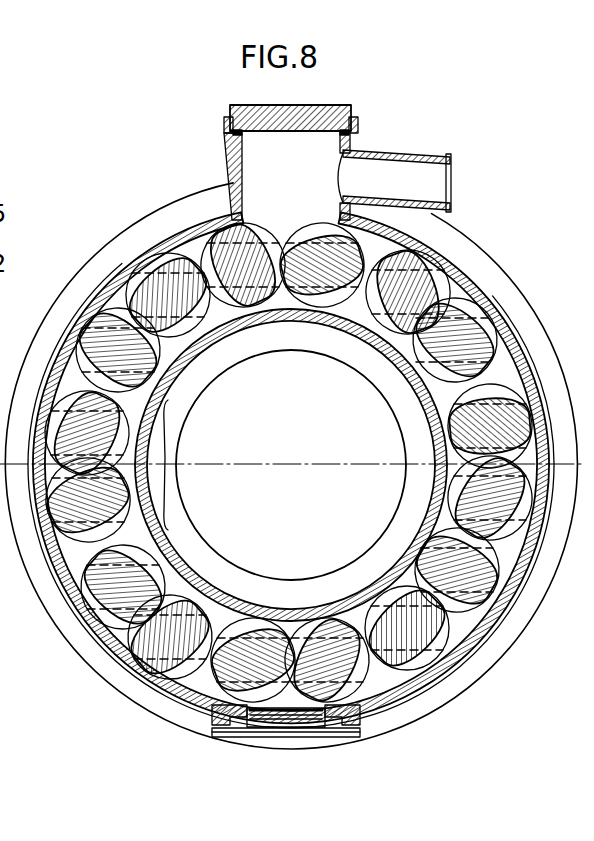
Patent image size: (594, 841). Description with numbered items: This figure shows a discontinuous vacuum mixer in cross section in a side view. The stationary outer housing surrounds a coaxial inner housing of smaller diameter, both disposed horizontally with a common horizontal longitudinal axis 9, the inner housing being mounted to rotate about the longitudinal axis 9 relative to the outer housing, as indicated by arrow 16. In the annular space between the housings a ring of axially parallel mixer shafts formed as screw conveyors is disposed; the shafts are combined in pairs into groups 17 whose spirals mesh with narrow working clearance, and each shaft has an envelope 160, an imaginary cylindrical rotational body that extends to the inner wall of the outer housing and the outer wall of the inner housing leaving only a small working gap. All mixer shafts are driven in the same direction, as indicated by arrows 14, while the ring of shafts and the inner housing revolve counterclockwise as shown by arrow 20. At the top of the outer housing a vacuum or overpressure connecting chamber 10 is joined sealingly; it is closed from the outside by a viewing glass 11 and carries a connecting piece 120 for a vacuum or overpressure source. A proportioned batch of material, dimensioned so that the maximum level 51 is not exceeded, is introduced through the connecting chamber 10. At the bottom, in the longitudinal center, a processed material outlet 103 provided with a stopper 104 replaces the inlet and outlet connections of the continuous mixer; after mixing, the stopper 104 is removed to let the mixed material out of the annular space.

The longitudinal axis 9 is at (22, 457).
The vacuum or overpressure connecting chamber 10 is at (354, 142).
The viewing glass 11 is at (352, 106).
The connecting piece 120 is at (432, 174).
The arrows 14 is at (289, 439).
The envelope 160 is at (440, 288).
The level 51 is at (192, 262).
The arrow 20 is at (291, 465).
The arrow 16 is at (300, 331).
The groups 17 is at (176, 448).
The processed material outlet 103 is at (258, 758).
The stopper 104 is at (313, 723).